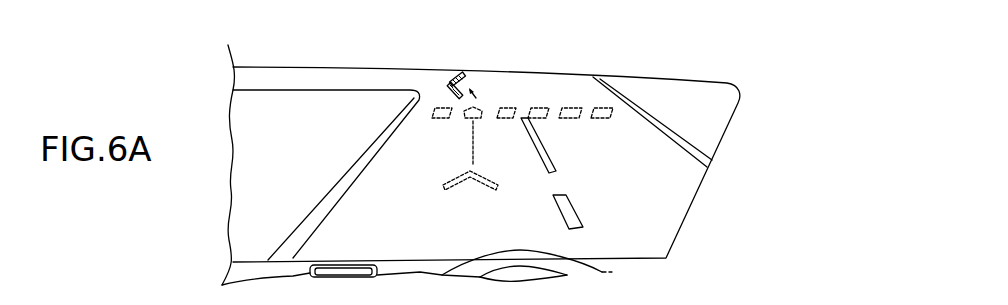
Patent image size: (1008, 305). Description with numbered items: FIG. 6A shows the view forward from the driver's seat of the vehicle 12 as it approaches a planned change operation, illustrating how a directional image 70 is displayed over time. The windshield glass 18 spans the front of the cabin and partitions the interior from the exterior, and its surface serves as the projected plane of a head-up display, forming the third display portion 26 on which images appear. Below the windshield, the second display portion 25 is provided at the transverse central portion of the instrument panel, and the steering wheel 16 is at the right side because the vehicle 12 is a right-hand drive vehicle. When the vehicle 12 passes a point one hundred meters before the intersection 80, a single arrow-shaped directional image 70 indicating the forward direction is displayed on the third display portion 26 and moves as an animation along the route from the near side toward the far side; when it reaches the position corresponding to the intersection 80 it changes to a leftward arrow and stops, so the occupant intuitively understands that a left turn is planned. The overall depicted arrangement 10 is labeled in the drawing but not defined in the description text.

The vehicle 10 is at (763, 157).
The windshield 12 is at (791, 100).
The display region 18 is at (545, 75).
The projection area 26 is at (486, 164).
The first display image 70 is at (446, 72).
The second display image 80 is at (499, 90).
The sensor unit 25 is at (345, 272).
The steering wheel 16 is at (555, 260).